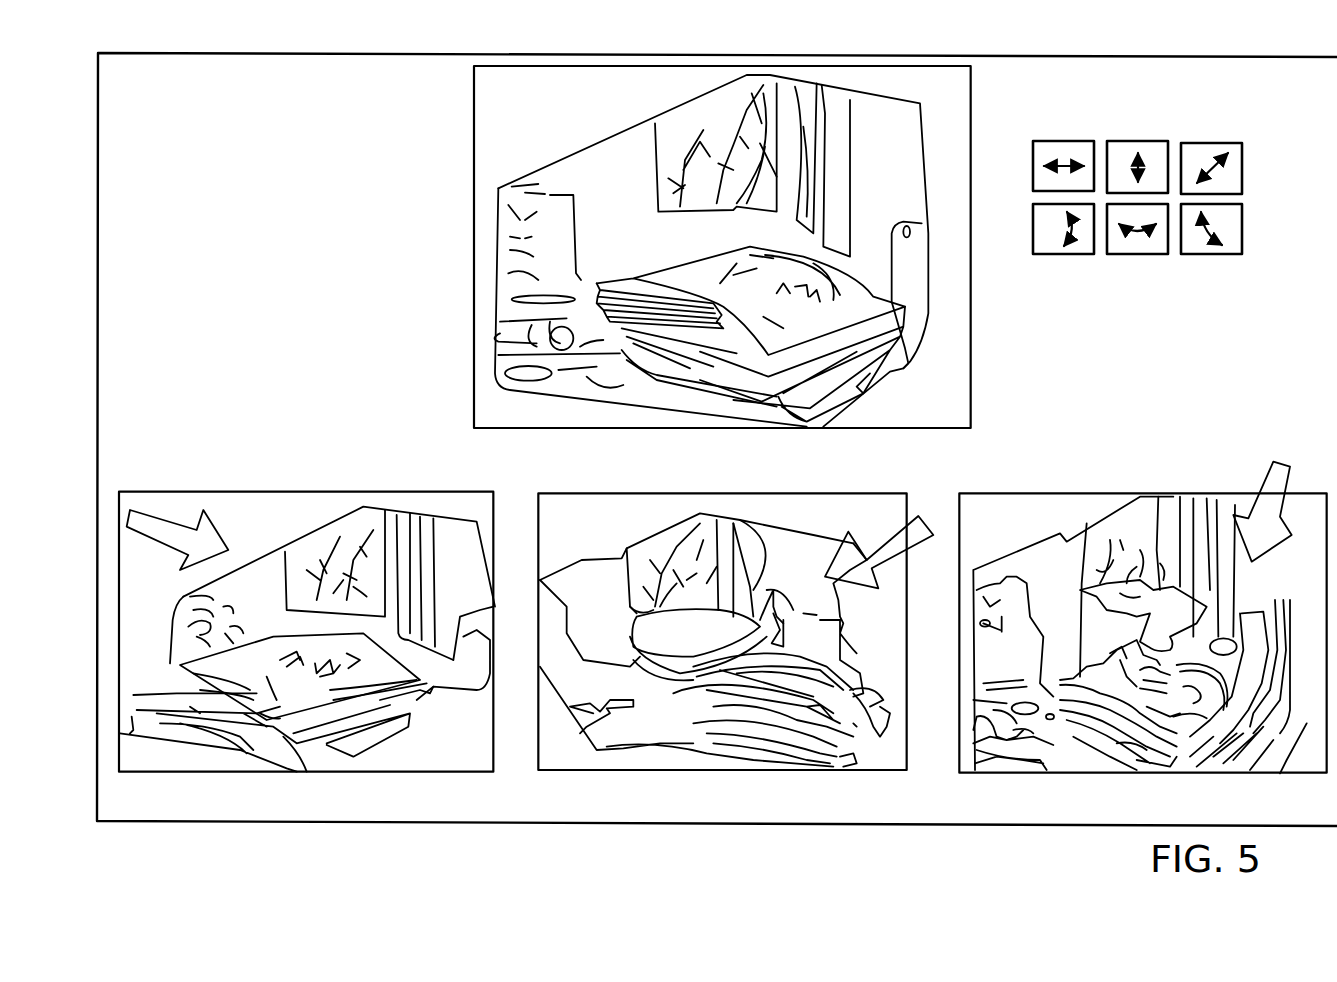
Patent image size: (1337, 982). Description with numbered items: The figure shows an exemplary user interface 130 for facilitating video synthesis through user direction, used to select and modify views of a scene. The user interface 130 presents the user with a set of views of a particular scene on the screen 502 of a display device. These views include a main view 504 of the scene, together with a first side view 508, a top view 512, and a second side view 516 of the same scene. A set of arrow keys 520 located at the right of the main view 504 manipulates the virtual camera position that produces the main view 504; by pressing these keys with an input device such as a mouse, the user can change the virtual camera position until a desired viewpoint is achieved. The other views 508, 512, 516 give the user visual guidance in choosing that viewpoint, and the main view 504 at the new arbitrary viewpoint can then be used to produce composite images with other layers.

The user interface 130 is at (194, 834).
The screen 502 is at (1334, 96).
The main view 504 is at (973, 107).
The first side view 508 is at (322, 492).
The top view 512 is at (812, 493).
The second side view 516 is at (1117, 493).
The arrow keys 520 is at (1232, 143).